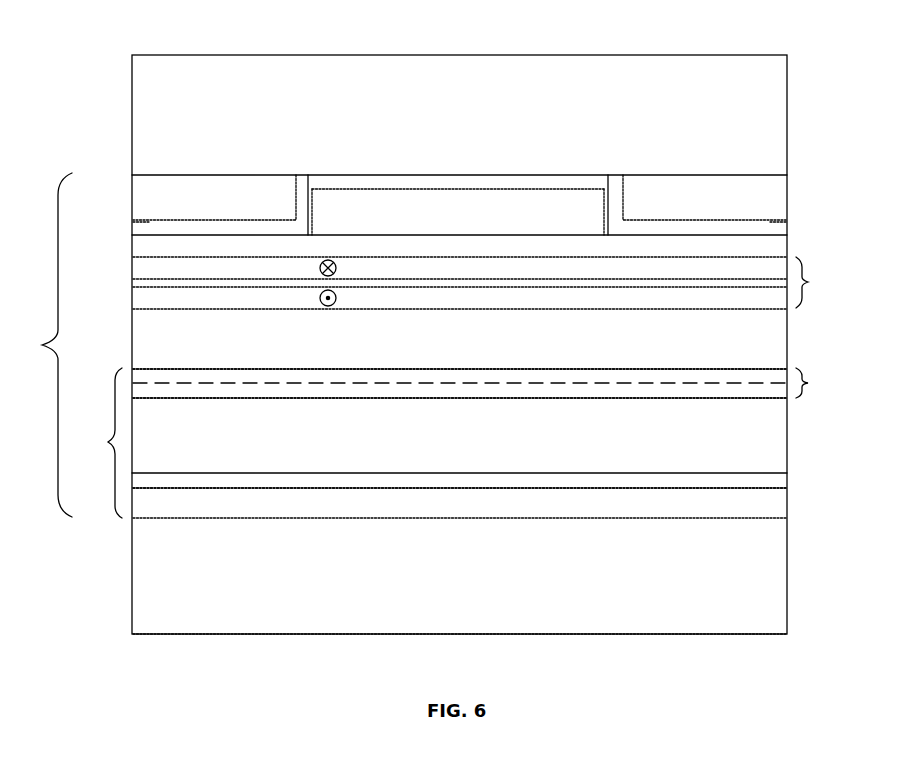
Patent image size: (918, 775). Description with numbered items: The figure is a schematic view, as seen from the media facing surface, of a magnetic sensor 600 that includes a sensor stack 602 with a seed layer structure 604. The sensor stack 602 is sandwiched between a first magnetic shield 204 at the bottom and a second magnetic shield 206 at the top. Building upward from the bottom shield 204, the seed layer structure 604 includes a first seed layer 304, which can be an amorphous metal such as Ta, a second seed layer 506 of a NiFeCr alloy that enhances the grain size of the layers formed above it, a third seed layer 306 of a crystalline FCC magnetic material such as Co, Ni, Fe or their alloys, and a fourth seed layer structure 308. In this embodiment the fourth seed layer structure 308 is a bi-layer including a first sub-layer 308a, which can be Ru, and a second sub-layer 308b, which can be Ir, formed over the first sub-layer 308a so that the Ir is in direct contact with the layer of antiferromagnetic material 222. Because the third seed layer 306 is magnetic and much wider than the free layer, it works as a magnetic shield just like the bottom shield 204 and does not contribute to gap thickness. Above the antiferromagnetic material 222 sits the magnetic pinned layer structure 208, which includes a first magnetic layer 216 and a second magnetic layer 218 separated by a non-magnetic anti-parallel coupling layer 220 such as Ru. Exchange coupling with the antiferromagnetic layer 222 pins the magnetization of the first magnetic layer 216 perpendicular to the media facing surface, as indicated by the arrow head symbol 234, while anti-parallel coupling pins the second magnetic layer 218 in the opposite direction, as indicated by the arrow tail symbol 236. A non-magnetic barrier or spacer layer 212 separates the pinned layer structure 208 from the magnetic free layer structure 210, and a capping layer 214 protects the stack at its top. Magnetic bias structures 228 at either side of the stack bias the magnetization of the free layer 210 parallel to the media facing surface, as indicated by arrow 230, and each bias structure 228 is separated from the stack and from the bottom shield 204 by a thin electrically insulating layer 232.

The sensor 600 is at (550, 50).
The second magnetic shield 206 is at (492, 118).
The capping layer 214 is at (408, 182).
The magnetic bias structures 228 is at (244, 203).
The magnetic free layer structure 210 is at (434, 212).
The arrow 230 is at (566, 212).
The electrically insulating layer 232 is at (147, 223).
The non-magnetic barrier or spacer layer 212 is at (490, 246).
The second magnetic layer 218 is at (490, 268).
The first magnetic layer 216 is at (490, 298).
The non-magnetic anti-parallel coupling layer 220 is at (518, 284).
The magnetic pinned layer structure 208 is at (796, 257).
The arrow tail symbol 236 is at (337, 268).
The arrow head symbol 234 is at (337, 298).
The layer of antiferromagnetic material 222 is at (490, 338).
The fourth seed layer structure 308 is at (796, 368).
The second sub-layer 308b is at (500, 377).
The first sub-layer 308a is at (512, 397).
The third seed layer 306 is at (490, 435).
The first seed layer 304 is at (490, 502).
The second seed layer 506 is at (522, 480).
The first magnetic shield 204 is at (492, 576).
The sensor stack 602 is at (58, 204).
The seed layer structure 604 is at (117, 377).